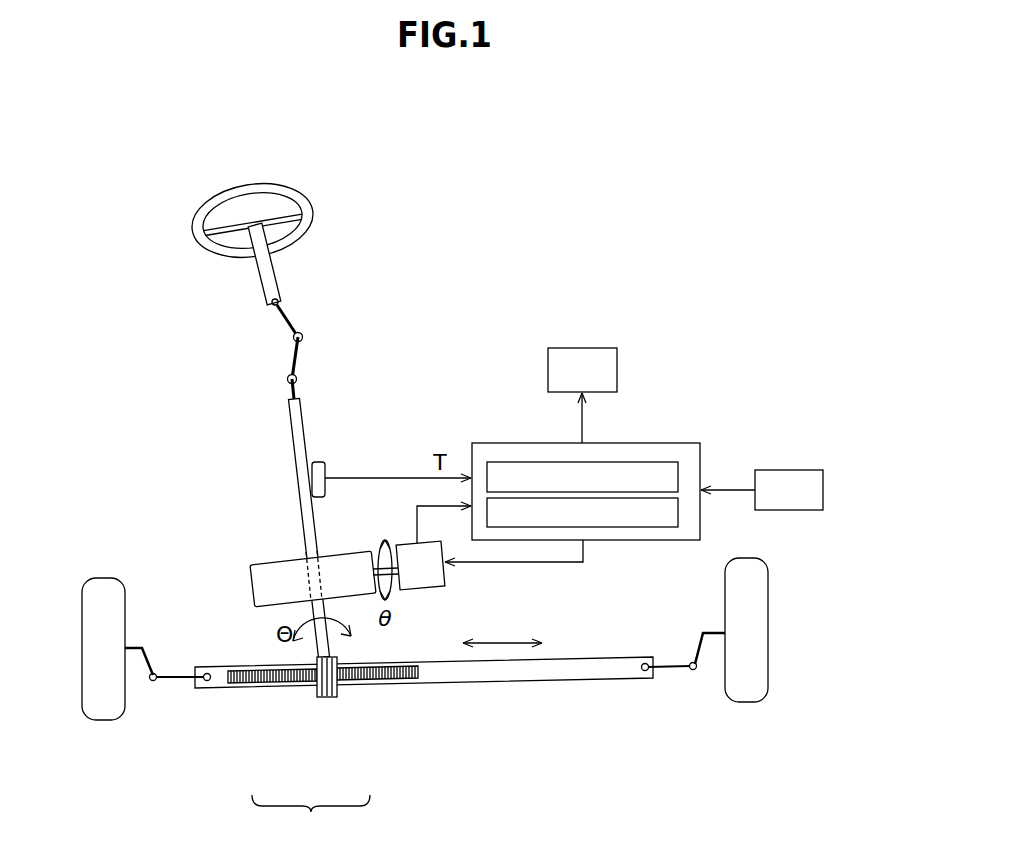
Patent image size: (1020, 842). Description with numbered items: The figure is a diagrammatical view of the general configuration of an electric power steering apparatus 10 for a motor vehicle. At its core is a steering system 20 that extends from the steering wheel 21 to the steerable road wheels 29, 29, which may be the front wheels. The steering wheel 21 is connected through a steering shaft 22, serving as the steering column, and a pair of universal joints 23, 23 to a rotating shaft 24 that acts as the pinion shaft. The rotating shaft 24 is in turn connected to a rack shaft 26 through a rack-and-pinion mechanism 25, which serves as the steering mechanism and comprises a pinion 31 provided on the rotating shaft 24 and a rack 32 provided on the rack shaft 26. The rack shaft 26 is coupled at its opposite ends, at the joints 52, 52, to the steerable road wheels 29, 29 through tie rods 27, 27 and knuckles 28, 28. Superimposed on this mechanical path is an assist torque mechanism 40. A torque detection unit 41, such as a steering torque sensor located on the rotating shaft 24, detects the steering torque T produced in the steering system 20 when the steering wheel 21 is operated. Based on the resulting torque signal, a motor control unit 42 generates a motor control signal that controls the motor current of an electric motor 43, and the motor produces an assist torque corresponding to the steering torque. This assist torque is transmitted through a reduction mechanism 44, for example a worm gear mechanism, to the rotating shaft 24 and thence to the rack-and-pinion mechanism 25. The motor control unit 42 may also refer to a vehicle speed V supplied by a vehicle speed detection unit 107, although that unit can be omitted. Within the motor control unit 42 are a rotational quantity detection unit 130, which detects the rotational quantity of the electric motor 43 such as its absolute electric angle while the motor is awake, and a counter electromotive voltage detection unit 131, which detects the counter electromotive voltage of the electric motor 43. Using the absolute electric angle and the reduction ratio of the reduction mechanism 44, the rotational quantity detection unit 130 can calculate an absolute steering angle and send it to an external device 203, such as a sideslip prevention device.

The electric power steering apparatus 10 is at (616, 196).
The steering system 20 is at (178, 220).
The steering wheel 21 is at (283, 190).
The steering shaft 22 is at (270, 276).
The universal joint 23 is at (303, 333).
The rotating shaft 24 is at (300, 405).
The rack-and-pinion mechanism 25 is at (311, 818).
The rack shaft 26 is at (442, 676).
The tie rod 27 is at (165, 681).
The knuckle 28 is at (133, 646).
The steerable road wheel 29 is at (110, 716).
The pinion 31 is at (330, 697).
The rack 32 is at (283, 686).
The assist torque mechanism 40 is at (438, 441).
The torque detection unit 41 is at (318, 461).
The motor control unit 42 is at (586, 493).
The electric motor 43 is at (422, 589).
The reduction mechanism 44 is at (345, 556).
The rack end joint 52 is at (208, 683).
The vehicle speed detection unit 107 is at (788, 473).
The rotational quantity detection unit 130 is at (494, 462).
The counter electromotive voltage detection unit 131 is at (634, 528).
The external device 203 is at (583, 352).